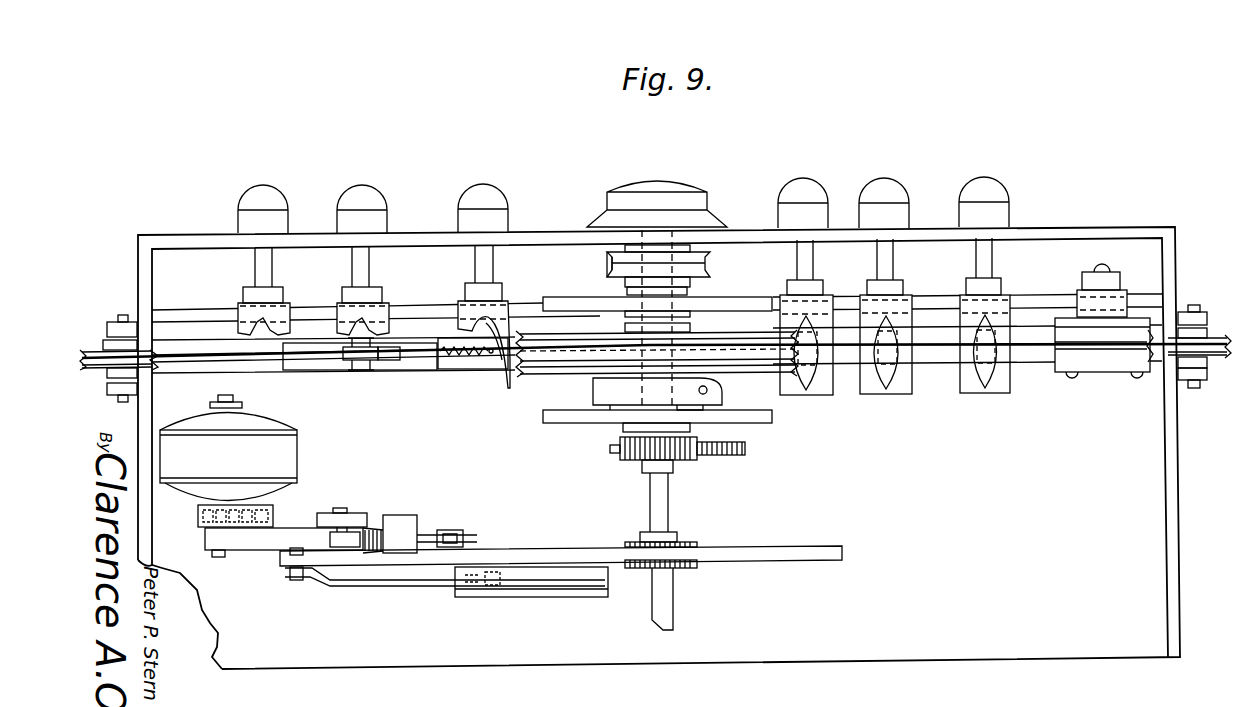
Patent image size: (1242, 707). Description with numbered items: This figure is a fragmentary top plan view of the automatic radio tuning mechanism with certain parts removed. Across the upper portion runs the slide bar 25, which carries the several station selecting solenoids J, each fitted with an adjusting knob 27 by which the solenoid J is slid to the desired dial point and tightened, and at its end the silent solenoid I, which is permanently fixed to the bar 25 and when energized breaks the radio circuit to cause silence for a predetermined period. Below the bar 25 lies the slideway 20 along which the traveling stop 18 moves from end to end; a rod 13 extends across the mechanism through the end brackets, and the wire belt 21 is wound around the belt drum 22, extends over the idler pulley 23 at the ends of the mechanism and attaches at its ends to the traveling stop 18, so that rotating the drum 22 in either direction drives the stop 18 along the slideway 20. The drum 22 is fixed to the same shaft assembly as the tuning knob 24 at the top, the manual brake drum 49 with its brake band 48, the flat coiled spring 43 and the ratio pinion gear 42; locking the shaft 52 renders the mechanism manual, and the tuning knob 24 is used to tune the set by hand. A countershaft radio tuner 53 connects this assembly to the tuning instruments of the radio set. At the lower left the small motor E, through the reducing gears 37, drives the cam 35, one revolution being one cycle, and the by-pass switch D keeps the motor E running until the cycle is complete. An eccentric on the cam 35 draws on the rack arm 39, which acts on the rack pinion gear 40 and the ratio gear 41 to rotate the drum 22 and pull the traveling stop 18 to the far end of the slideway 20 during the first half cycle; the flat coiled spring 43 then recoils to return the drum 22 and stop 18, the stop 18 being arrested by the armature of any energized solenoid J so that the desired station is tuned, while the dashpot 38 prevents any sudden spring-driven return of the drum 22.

The adjusting knob 27 is at (352, 205).
The tuning knob 24 is at (668, 192).
The station selecting solenoid J is at (278, 308).
The slide bar 25 is at (193, 315).
The slideway 20 is at (203, 372).
The rod 13 is at (82, 358).
The idler pulley 23 is at (95, 370).
The wire belt 21 is at (323, 360).
The traveling stop 18 is at (393, 362).
The belt drum 22 is at (541, 372).
The brake band 48 is at (708, 262).
The manual brake drum 49 is at (608, 270).
The flat coiled spring 43 is at (724, 390).
The ratio pinion gear 42 is at (685, 458).
The 180° ratio gear 41 is at (740, 457).
The shaft 52 is at (650, 468).
The rack pinion gear 40 is at (697, 542).
The countershaft radio tuner 53 is at (672, 598).
The rack arm 39 is at (517, 552).
The dashpot 38 is at (547, 597).
The small motor E is at (280, 452).
The reducing gears 37 is at (273, 511).
The cam 35 is at (258, 548).
The by-pass switch D is at (403, 523).
The silent solenoid I is at (1125, 372).